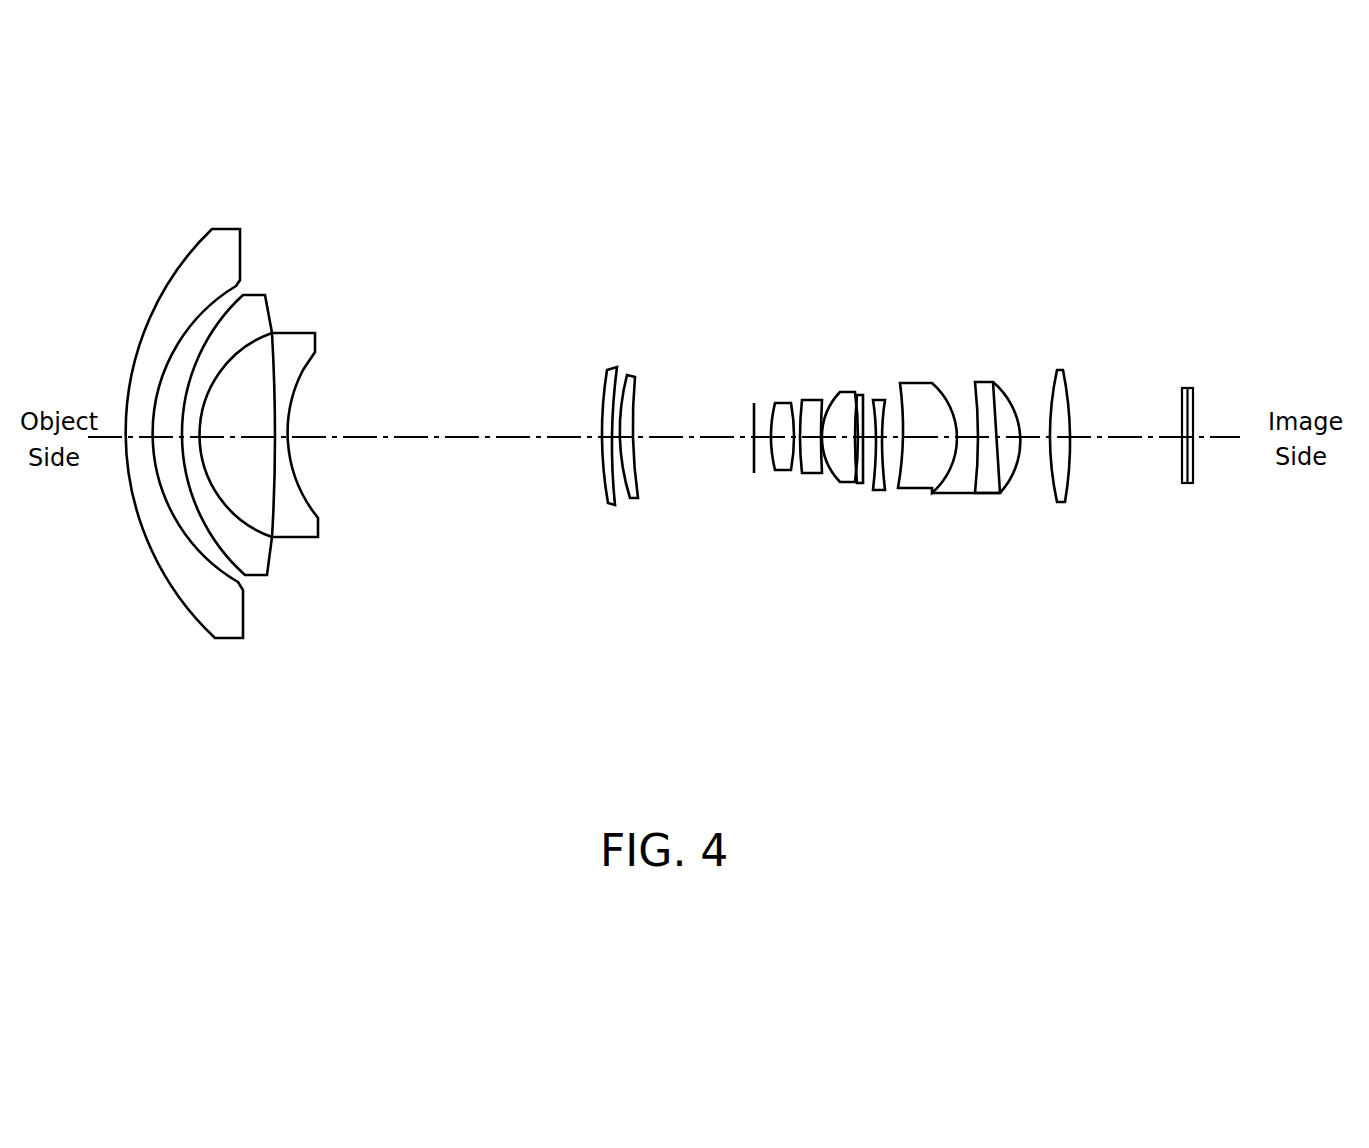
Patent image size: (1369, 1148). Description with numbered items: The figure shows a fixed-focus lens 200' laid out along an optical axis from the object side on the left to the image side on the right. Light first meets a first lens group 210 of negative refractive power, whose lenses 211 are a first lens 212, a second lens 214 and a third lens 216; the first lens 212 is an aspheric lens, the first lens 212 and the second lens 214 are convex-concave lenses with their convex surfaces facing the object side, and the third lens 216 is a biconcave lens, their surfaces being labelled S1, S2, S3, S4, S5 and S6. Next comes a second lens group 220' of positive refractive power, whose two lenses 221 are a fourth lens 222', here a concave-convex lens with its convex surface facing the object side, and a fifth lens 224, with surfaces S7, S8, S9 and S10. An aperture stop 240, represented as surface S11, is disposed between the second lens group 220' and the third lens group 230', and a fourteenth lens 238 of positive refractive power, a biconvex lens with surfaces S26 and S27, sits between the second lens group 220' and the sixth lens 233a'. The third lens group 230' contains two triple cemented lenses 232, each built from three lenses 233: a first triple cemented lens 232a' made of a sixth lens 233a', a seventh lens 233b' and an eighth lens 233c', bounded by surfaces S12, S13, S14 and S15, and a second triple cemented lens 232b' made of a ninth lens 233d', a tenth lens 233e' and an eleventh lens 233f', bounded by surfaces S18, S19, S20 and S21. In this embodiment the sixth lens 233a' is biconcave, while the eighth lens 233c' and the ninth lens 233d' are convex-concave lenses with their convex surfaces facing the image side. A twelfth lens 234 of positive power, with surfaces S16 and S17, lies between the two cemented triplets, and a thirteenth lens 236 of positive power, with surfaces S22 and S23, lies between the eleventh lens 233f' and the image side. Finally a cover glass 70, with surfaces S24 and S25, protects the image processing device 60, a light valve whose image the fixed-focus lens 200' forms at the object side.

The fixed-focus lens 200' is at (1115, 779).
The first lens group 210 is at (259, 499).
The lens 211 is at (257, 471).
The first lens 212 is at (191, 593).
The second lens 214 is at (255, 563).
The third lens 216 is at (330, 523).
The second lens group 220' is at (549, 503).
The lens 221 is at (550, 480).
The fourth lens 222' is at (540, 480).
The fifth lens 224 is at (635, 497).
The third lens group 230' is at (985, 537).
The triple cemented lens 232 is at (969, 519).
The first triple cemented lens 232a' is at (830, 524).
The second triple cemented lens 232b' is at (1068, 519).
The lens 233 is at (830, 496).
The sixth lens 233a' is at (761, 500).
The seventh lens 233b' is at (832, 496).
The eighth lens 233c' is at (907, 497).
The ninth lens 233d' is at (984, 491).
The tenth lens 233e' is at (1061, 491).
The eleventh lens 233f' is at (1114, 491).
The twelfth lens 234 is at (879, 486).
The thirteenth lens 236 is at (1177, 513).
The fourteenth lens 238 is at (783, 473).
The aperture stop 240 is at (753, 457).
The cover glass 70 is at (1178, 401).
The image processing device 60 is at (1196, 401).
The surface S1 is at (184, 260).
The surface S2 is at (211, 298).
The surface S3 is at (231, 300).
The surface S4 is at (252, 335).
The surface S5 is at (276, 360).
The surface S6 is at (306, 375).
The surface S7 is at (603, 382).
The surface S8 is at (621, 372).
The surface S9 is at (627, 378).
The surface S10 is at (643, 388).
The surface S11 is at (752, 418).
The surface S12 is at (806, 402).
The surface S13 is at (820, 402).
The surface S14 is at (842, 393).
The surface S15 is at (856, 393).
The surface S16 is at (861, 395).
The surface S17 is at (877, 402).
The surface S18 is at (901, 396).
The surface S19 is at (934, 384).
The surface S20 is at (978, 383).
The surface S21 is at (995, 383).
The surface S22 is at (1057, 372).
The surface S23 is at (1065, 372).
The surface S24 is at (1181, 392).
The surface S25 is at (1194, 392).
The surface S26 is at (774, 410).
The surface S27 is at (790, 410).